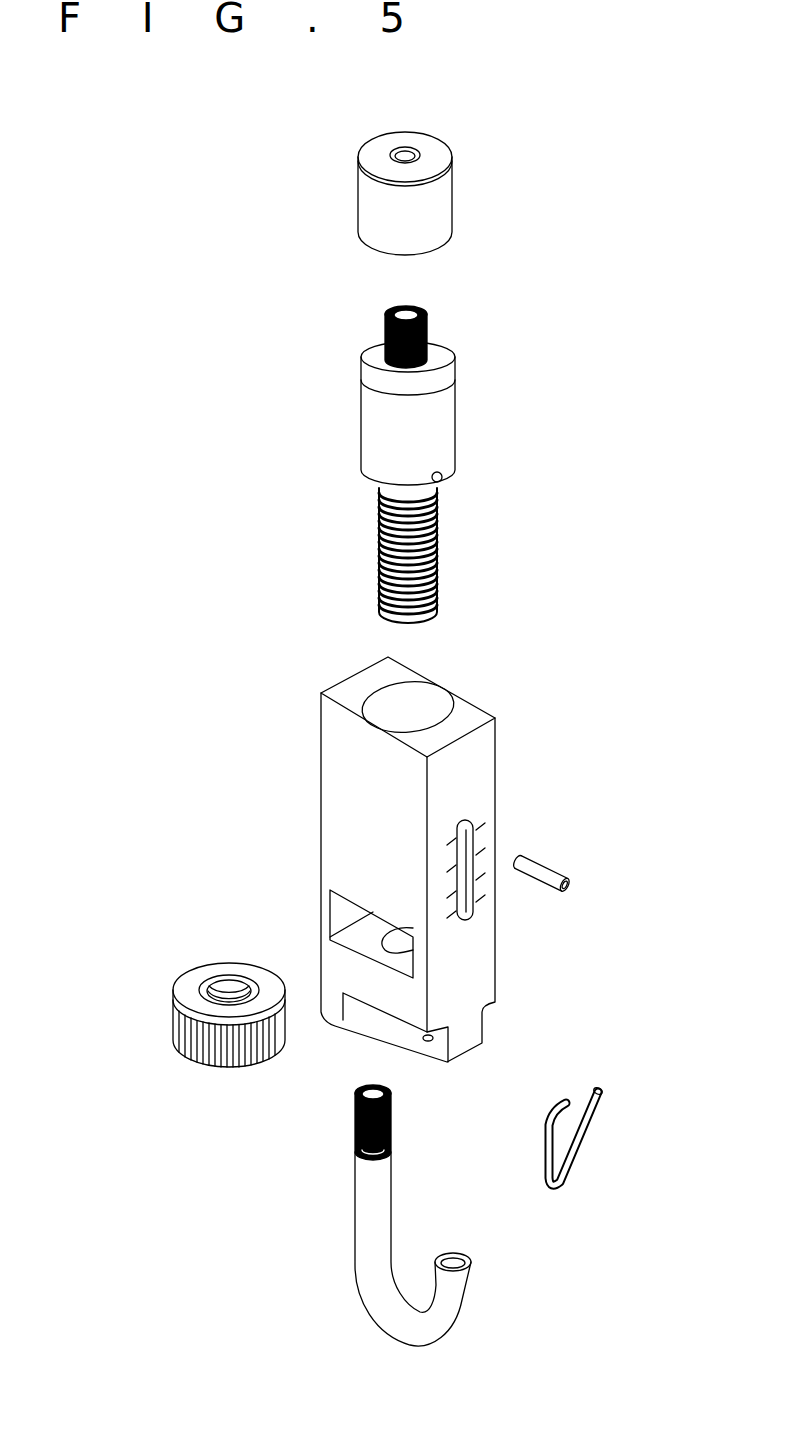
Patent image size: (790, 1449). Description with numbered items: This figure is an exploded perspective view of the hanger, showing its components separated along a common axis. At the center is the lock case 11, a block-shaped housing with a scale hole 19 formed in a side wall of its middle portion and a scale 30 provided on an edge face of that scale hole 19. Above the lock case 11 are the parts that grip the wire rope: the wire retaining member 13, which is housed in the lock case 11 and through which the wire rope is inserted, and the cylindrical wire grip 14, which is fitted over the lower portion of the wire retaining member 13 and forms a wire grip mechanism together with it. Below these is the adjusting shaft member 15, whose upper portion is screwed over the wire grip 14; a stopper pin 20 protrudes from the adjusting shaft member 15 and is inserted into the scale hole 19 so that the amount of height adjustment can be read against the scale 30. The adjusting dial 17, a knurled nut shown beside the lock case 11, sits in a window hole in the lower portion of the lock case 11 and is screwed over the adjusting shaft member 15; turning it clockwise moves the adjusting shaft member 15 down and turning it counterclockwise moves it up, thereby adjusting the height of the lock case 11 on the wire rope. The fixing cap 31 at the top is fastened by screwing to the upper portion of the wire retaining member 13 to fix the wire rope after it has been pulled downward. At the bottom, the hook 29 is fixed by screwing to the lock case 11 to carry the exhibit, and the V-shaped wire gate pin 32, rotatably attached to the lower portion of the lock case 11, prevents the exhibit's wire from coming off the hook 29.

The lock case 11 is at (335, 808).
The wire retaining member 13 is at (428, 322).
The cylindrical wire grip 14 is at (422, 423).
The adjusting shaft member 15 is at (437, 527).
The adjusting dial 17 is at (173, 1012).
The scale hole 19 is at (478, 838).
The stopper pin 20 is at (540, 862).
The hook 29 is at (397, 1308).
The scale 30 is at (478, 873).
The fixing cap 31 is at (430, 199).
The gate pin 32 is at (592, 1133).